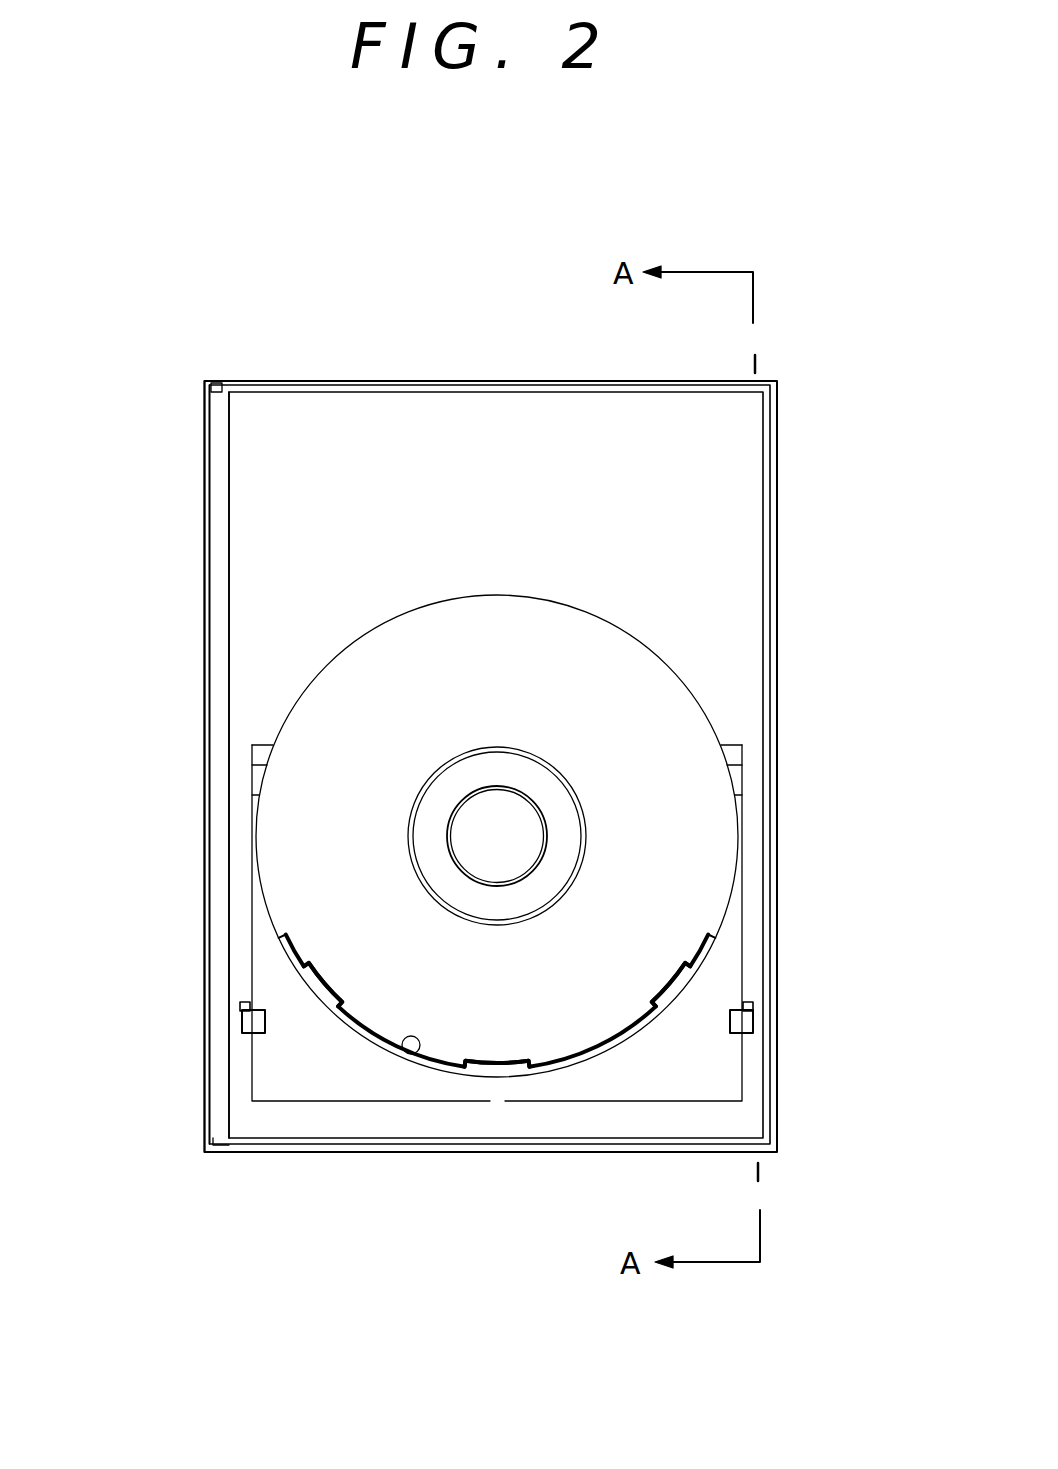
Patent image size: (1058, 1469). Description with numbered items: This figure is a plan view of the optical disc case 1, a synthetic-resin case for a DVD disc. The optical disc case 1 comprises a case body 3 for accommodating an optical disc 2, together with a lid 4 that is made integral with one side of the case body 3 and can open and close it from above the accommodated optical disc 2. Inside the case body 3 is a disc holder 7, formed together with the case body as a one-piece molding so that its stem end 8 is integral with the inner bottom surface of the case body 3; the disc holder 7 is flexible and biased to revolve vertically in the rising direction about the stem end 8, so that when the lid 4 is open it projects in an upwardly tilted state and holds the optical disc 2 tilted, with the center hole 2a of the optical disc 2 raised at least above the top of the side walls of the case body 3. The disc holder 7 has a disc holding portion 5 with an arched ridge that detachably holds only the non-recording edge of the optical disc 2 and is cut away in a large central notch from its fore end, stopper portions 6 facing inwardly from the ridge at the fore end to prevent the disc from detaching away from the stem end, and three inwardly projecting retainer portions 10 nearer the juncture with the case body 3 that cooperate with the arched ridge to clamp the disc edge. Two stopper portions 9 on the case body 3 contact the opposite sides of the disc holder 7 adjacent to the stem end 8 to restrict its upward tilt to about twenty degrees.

The optical disc case 1 is at (452, 340).
The optical disc 2 is at (338, 672).
The center hole 2a is at (462, 860).
The case body 3 is at (706, 512).
The lid 4 is at (209, 472).
The disc holding portion 5 is at (408, 1056).
The stopper portions 6 is at (258, 747).
The disc holder 7 is at (612, 1064).
The stem end 8 is at (306, 1108).
The stopper portions 9 is at (252, 1022).
The retainer portions 10 is at (313, 986).